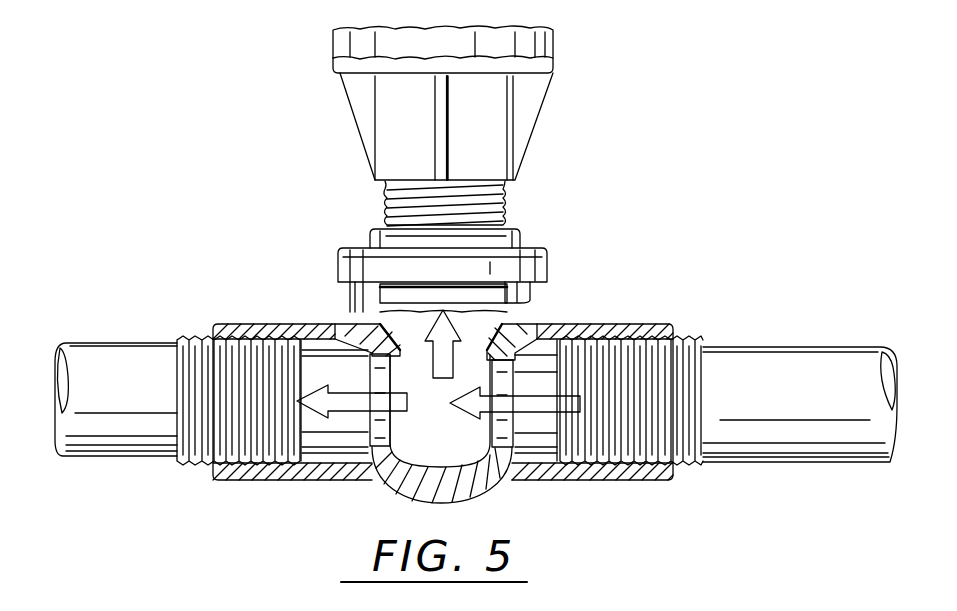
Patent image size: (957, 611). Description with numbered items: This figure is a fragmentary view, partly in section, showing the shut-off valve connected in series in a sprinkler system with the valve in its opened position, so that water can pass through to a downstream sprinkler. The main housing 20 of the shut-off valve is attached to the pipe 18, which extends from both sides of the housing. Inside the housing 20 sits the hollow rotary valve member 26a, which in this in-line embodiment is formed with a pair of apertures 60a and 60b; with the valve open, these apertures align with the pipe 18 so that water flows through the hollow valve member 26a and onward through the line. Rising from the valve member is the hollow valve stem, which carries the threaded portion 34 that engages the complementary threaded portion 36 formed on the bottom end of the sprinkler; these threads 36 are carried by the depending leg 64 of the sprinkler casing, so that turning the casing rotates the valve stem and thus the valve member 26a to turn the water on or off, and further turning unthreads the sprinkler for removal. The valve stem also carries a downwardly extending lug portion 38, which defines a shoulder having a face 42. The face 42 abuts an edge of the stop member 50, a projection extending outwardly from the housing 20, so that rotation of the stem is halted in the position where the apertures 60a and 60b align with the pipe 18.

The depending leg 64 is at (505, 123).
The complementary threaded portion 36 is at (507, 190).
The threaded portion 34 is at (520, 233).
The face 42 is at (508, 288).
The lug portion 38 is at (547, 297).
The stop member 50 is at (503, 297).
The main housing 20 is at (595, 481).
The valve member 26a is at (397, 478).
The aperture 60b is at (372, 368).
The aperture 60a is at (540, 370).
The pipe 18 is at (117, 453).